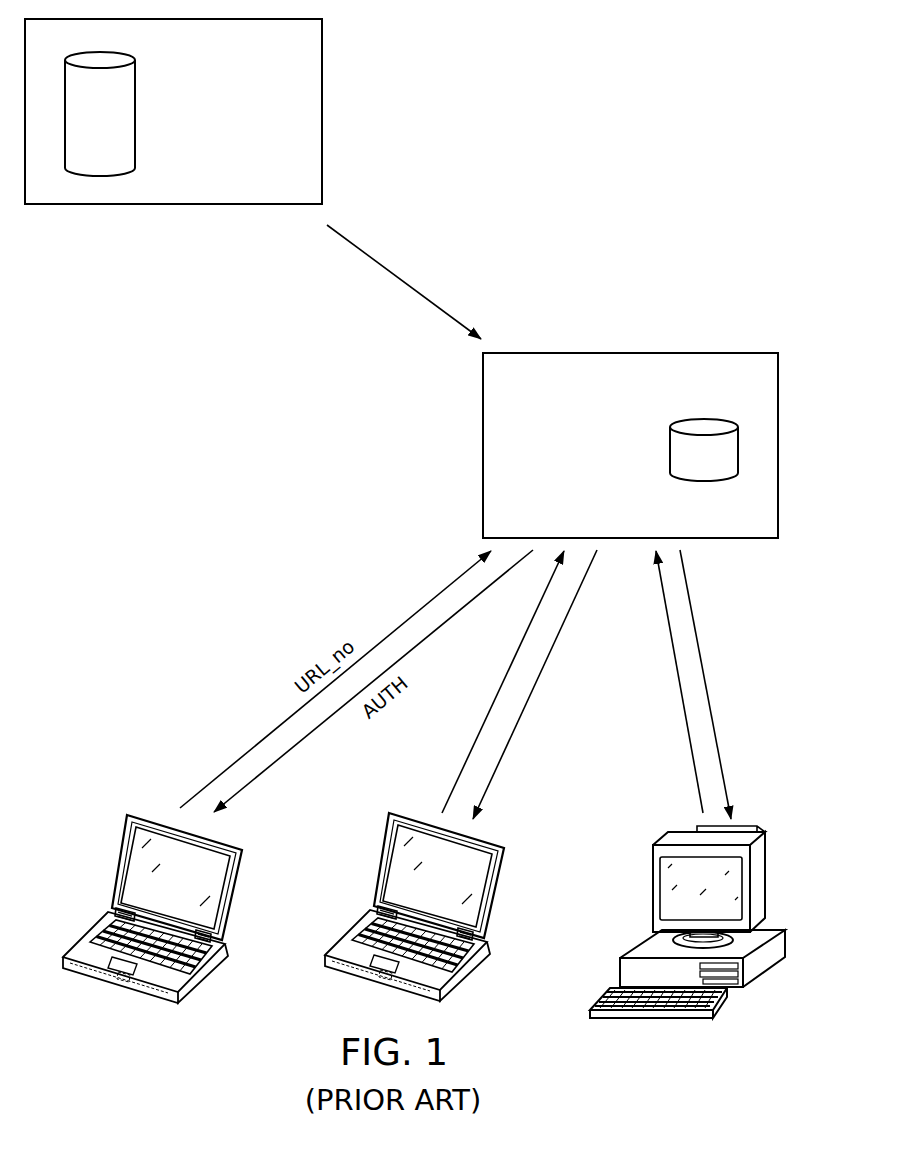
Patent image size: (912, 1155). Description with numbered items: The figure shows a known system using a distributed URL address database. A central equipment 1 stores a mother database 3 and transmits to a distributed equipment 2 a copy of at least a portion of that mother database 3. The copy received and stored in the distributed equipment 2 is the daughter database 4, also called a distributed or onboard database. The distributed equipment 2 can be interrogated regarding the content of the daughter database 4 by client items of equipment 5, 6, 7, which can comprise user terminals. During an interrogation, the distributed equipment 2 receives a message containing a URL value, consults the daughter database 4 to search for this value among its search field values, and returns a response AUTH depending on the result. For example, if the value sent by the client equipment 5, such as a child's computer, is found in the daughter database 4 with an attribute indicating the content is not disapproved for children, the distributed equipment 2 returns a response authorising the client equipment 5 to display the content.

The central equipment 1 is at (322, 48).
The distributed equipment 2 is at (725, 353).
The mother database 3 is at (137, 82).
The daughter database 4 is at (670, 442).
The client equipment 5 is at (123, 838).
The client equipment 6 is at (388, 843).
The client equipment 7 is at (652, 865).